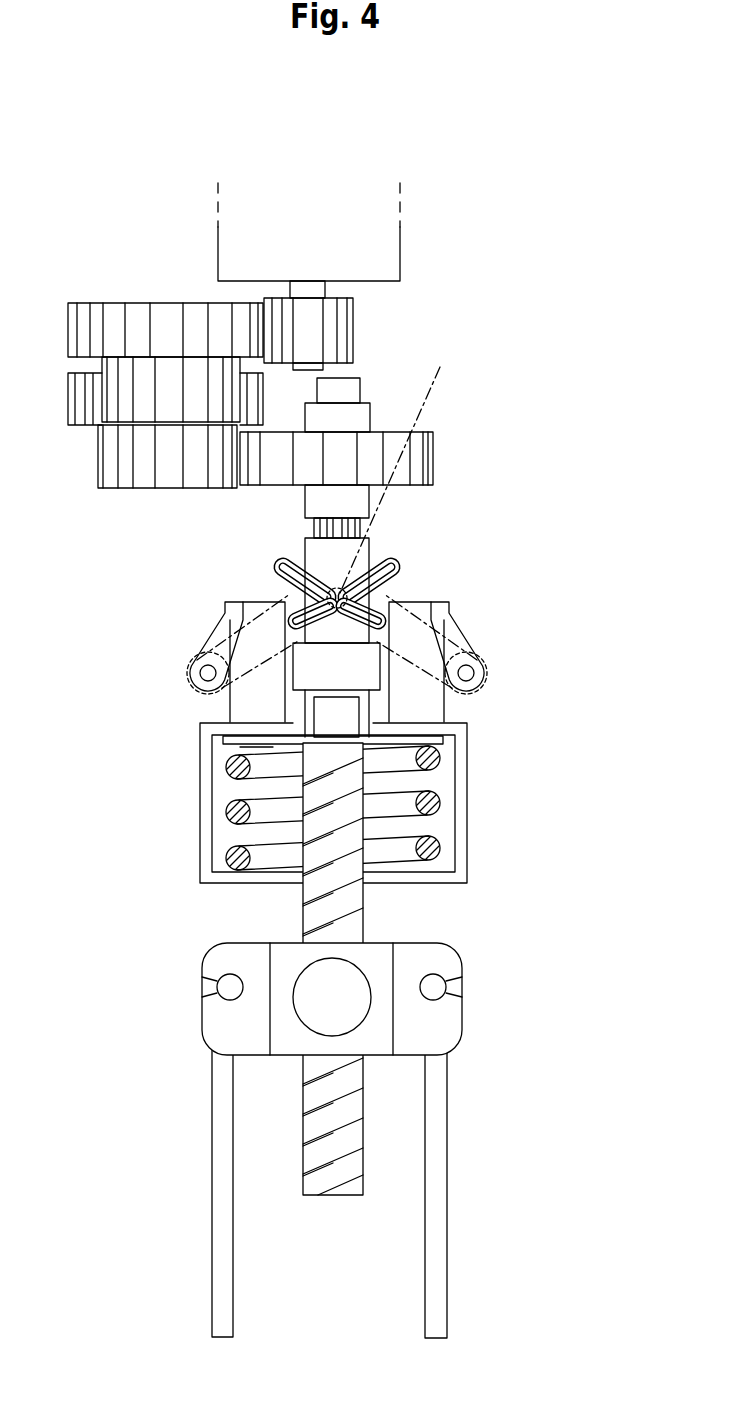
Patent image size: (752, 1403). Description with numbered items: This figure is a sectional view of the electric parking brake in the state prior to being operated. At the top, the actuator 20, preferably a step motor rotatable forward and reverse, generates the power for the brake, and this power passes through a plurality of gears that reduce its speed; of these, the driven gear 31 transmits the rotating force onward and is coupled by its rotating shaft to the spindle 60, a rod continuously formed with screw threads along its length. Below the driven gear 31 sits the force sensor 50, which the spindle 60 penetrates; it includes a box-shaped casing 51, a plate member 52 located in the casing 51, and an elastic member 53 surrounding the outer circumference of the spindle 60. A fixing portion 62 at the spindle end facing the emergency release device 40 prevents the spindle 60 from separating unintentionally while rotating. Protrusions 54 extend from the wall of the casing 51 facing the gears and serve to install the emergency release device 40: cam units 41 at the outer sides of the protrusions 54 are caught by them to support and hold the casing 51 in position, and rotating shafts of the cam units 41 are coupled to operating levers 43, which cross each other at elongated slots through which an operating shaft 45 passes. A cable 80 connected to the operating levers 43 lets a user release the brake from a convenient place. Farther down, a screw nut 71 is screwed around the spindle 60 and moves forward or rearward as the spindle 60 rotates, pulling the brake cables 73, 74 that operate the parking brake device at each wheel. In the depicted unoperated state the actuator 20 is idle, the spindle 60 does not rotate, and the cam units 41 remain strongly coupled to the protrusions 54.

The actuator 20 is at (400, 248).
The driven gear 31 is at (423, 450).
The cable 80 is at (382, 503).
The emergency release device 40 is at (260, 616).
The operating lever 43 is at (270, 570).
The cam unit 41 is at (195, 650).
The operating shaft 45 is at (395, 582).
The protrusion 54 is at (437, 605).
The fixing portion 62 is at (330, 717).
The force sensor 50 is at (392, 835).
The casing 51 is at (460, 855).
The plate member 52 is at (445, 745).
The elastic member 53 is at (403, 857).
The spindle 60 is at (315, 913).
The screw nut 71 is at (353, 1003).
The brake cable 73 is at (222, 1280).
The brake cable 74 is at (435, 1270).